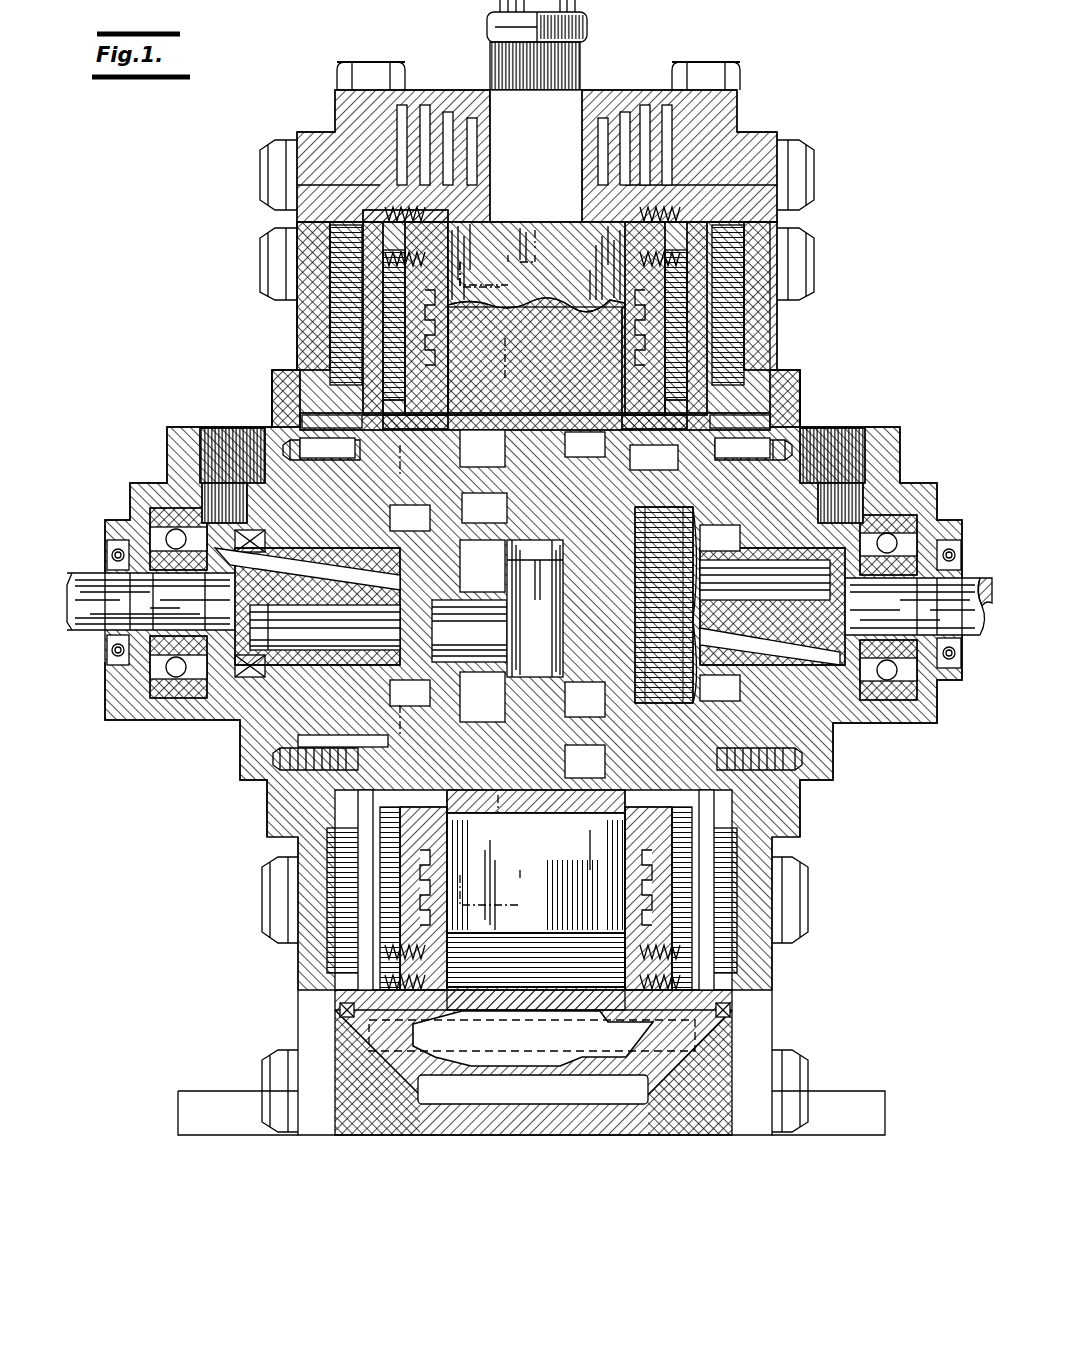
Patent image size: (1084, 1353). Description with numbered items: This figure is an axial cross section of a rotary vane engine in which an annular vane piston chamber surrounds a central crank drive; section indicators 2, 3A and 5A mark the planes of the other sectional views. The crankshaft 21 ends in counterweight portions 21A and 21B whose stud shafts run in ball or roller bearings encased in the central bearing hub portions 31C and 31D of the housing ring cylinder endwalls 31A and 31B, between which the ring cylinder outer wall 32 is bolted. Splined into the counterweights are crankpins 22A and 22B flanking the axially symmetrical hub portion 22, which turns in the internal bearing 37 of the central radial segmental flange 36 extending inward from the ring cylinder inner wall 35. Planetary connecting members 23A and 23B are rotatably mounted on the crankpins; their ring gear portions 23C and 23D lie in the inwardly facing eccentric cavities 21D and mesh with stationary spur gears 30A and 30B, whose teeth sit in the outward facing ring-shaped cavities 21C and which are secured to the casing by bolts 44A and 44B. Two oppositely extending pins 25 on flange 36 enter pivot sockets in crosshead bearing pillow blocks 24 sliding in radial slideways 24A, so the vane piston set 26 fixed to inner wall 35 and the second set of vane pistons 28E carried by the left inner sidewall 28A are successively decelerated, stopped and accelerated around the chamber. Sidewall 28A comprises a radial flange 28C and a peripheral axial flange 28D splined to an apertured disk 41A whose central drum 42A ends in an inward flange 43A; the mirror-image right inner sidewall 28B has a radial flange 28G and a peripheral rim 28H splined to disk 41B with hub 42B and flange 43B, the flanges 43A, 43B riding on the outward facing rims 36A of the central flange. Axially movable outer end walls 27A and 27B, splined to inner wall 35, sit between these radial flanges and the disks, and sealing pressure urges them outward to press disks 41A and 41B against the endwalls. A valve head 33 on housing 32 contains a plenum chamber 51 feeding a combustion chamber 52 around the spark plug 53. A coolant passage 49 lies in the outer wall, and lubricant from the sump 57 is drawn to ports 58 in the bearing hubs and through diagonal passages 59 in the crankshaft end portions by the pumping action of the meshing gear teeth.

The section line 2- 2 is at (535, 93).
The section line 3A is at (432, 462).
The section line 5A is at (503, 358).
The crankshaft 21 is at (75, 570).
The crankshaft counterweight portion 21A is at (157, 655).
The crankshaft counterweight portion 21B is at (680, 753).
The ring-shaped cavity 21C is at (760, 468).
The eccentric ring-shaped cavity 21D is at (617, 437).
The central hub portion 22 is at (547, 613).
The splined crankpin 22A is at (432, 630).
The splined crankpin 22B is at (634, 576).
The planetary connecting member 23A is at (500, 721).
The planetary connecting member 23B is at (621, 470).
The ring gear portion 23C is at (360, 780).
The ring gear portion 23D is at (760, 415).
The crosshead bearing pillow block 24 is at (532, 604).
The radial slideway 24A is at (500, 573).
The pin 25 is at (497, 518).
The vane piston set 26 is at (588, 250).
The outer end wall 27A is at (380, 293).
The outer end wall 27B is at (665, 288).
The inner sidewall 28A is at (372, 240).
The inner sidewall 28B is at (700, 338).
The radial flange 28C is at (450, 296).
The peripheral axial flange 28D is at (400, 213).
The second set of vane pistons 28E is at (525, 921).
The radially extending flange 28G is at (622, 272).
The peripheral rim 28H is at (735, 192).
The spur gear 30A is at (392, 585).
The spur gear 30B is at (700, 615).
The housing ring cylinder endwall 31A is at (312, 312).
The housing ring cylinder endwall 31B is at (760, 322).
The central bearing hub portion 31C is at (167, 447).
The central bearing hub portion 31D is at (900, 455).
The ring cylinder outer wall 32 is at (735, 110).
The valve head 33 is at (690, 95).
The ring cylinder inner wall 35 is at (516, 400).
The central radial segmental flange 36 is at (535, 440).
The inner peripheral rim 36A is at (557, 443).
The internal bearing 37 is at (513, 568).
The apertured disk 41A is at (340, 250).
The disk 41B is at (735, 250).
The central drum 42A is at (392, 363).
The central hub 42B is at (672, 392).
The radially inward extending flange 43A is at (513, 437).
The radially inwardly extending flange 43B is at (560, 824).
The bolt 44A is at (332, 428).
The bolt 44B is at (832, 770).
The housing coolant passage 49 is at (540, 1043).
The plenum chamber 51 is at (645, 112).
The combustion chamber 52 is at (562, 199).
The ignition spark plug 53 is at (572, 36).
The sump 57 is at (570, 1100).
The lubricant port 58 is at (215, 428).
The diagonal passage 59 is at (240, 518).